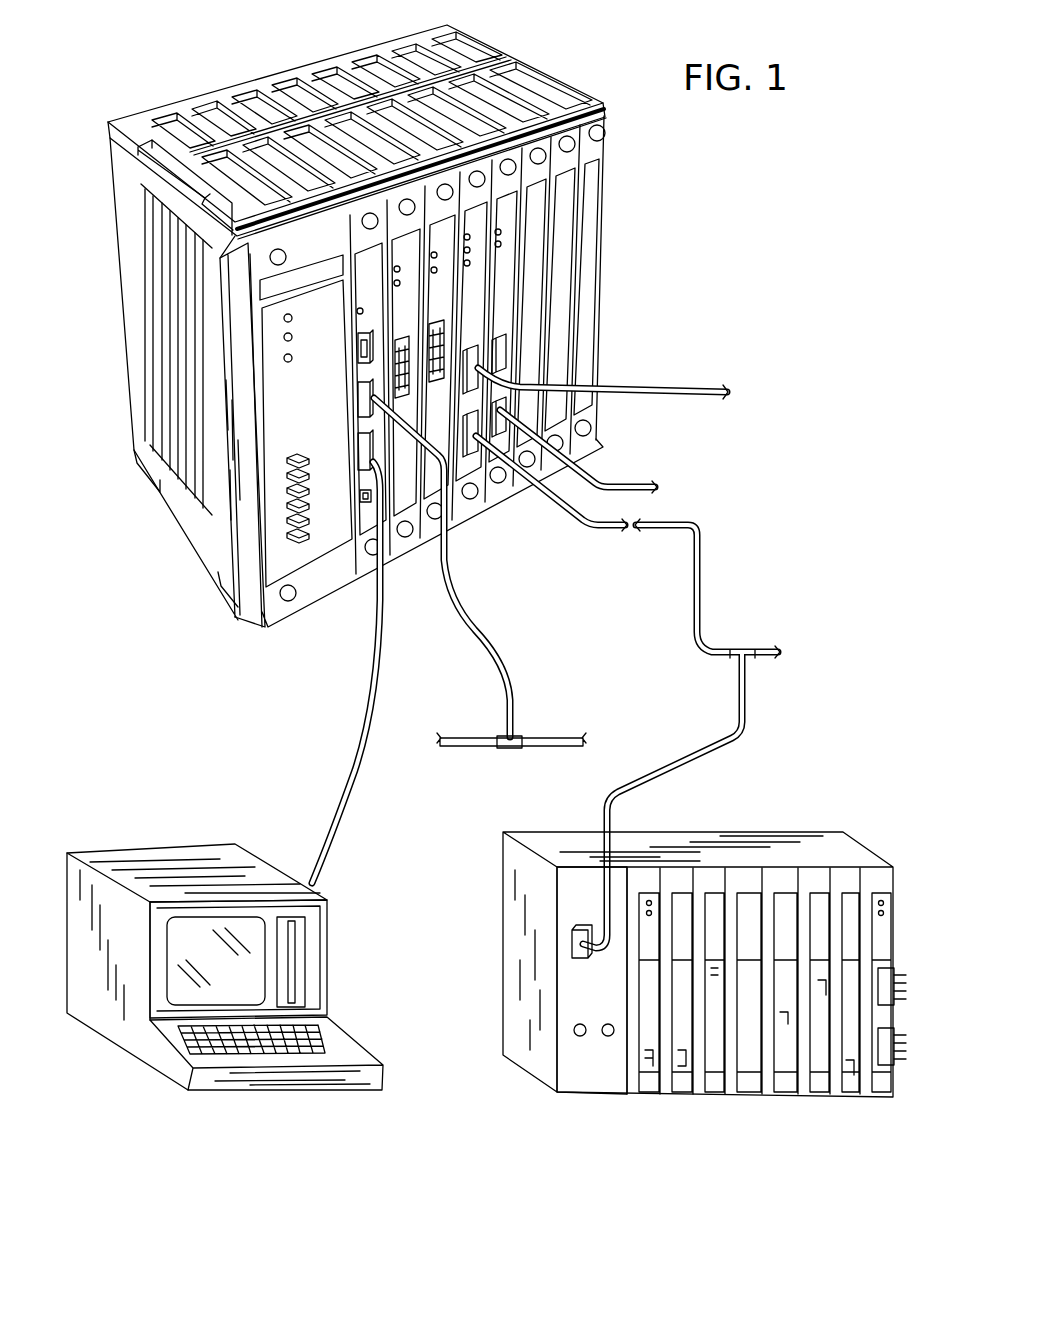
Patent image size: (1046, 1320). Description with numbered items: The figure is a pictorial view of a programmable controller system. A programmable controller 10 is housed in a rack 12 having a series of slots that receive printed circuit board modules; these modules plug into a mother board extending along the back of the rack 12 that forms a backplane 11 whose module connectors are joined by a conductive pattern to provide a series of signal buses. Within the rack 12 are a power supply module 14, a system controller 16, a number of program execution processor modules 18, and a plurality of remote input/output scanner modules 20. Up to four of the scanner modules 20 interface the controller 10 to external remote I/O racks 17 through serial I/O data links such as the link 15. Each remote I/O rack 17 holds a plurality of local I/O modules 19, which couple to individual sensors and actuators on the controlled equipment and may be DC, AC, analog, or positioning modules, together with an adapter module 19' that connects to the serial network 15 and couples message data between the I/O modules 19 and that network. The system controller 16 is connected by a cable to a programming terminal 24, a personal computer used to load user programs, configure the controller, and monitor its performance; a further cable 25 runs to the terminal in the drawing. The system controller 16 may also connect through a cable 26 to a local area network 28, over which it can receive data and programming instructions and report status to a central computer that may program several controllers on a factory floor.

The programmable controller 10 is at (224, 540).
The backplane 11 is at (290, 70).
The rack 12 is at (200, 517).
The power supply module 14 is at (312, 597).
The serial I/O data link 15 is at (693, 396).
The system controller 16 is at (358, 573).
The remote I/O rack 17 is at (526, 906).
The program execution processor module 18 is at (405, 547).
The local I/O module 19 is at (766, 1010).
The adapter module 19' is at (592, 1003).
The remote input/output scanner module 20 is at (490, 497).
The programming terminal 24 is at (309, 949).
The terminal cable 25 is at (365, 778).
The cable 26 is at (488, 638).
The local area network 28 is at (475, 737).